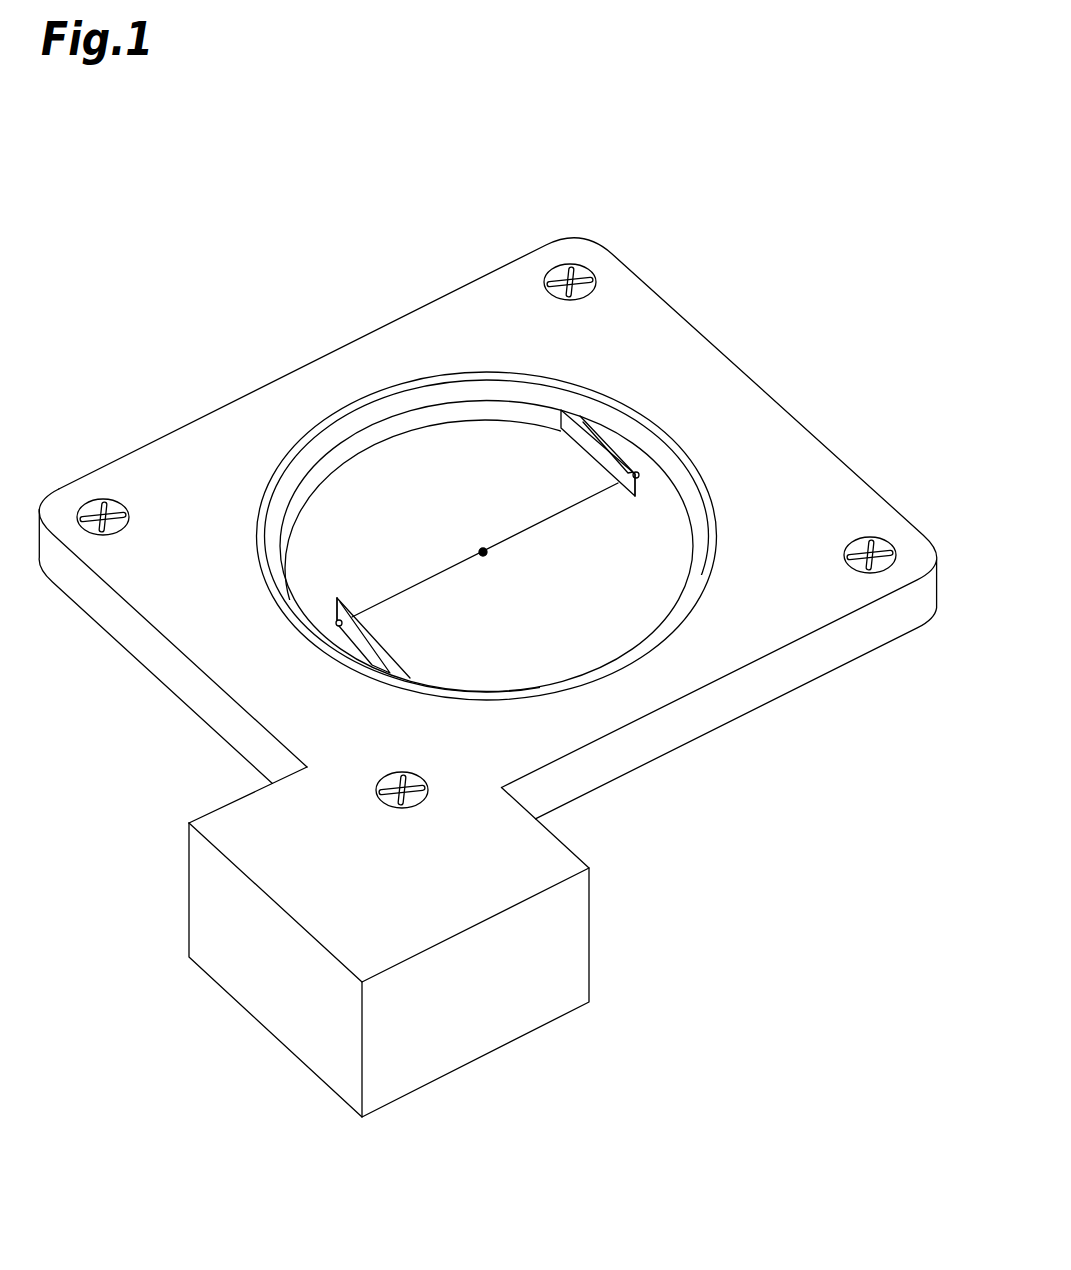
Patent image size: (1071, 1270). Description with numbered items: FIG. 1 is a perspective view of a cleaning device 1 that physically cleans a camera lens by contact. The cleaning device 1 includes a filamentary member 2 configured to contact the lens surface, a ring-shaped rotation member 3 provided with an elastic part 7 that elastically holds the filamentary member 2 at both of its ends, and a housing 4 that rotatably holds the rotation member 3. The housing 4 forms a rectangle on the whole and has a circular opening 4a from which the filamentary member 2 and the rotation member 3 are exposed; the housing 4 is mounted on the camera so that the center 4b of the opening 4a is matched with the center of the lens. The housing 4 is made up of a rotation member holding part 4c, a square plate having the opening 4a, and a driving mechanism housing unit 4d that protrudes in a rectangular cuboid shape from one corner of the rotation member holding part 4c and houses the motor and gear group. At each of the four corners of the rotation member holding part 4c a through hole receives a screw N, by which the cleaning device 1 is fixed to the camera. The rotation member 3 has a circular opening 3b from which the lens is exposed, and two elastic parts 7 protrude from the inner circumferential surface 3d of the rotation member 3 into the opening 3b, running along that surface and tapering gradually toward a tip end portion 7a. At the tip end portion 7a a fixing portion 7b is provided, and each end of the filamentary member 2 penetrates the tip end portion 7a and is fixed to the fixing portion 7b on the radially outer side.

The cleaning device 1 is at (655, 163).
The filamentary member 2 is at (480, 551).
The rotation member 3 is at (401, 402).
The opening 3b is at (367, 440).
The inner circumferential surface 3d is at (485, 568).
The housing 4 is at (511, 264).
The opening 4a is at (462, 392).
The center 4b is at (486, 556).
The rotation member holding part 4c is at (650, 390).
The driving mechanism housing unit 4d is at (237, 822).
The elastic part 7 is at (598, 456).
The tip end portion 7a is at (637, 483).
The fixing portion 7b is at (637, 472).
The screw N is at (592, 276).